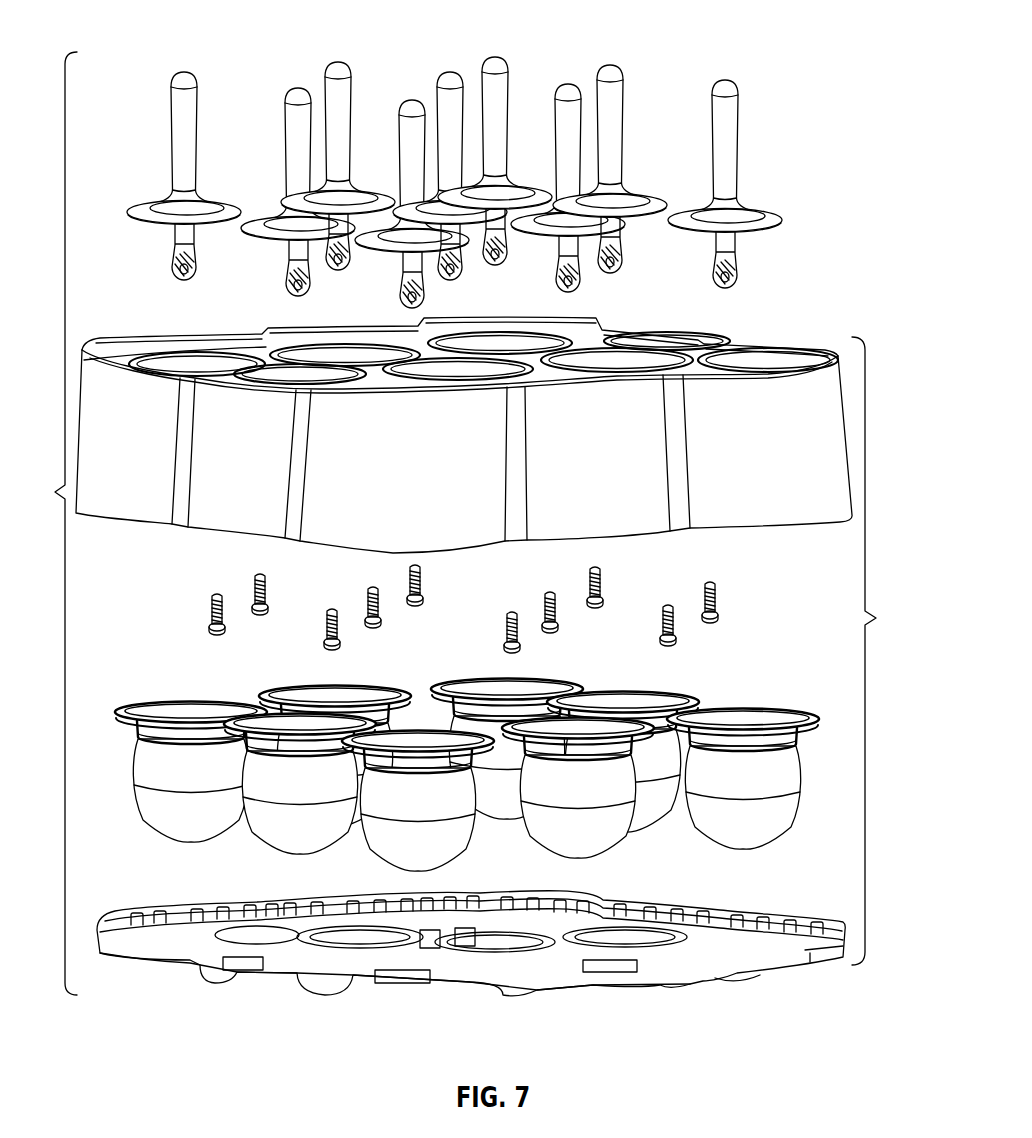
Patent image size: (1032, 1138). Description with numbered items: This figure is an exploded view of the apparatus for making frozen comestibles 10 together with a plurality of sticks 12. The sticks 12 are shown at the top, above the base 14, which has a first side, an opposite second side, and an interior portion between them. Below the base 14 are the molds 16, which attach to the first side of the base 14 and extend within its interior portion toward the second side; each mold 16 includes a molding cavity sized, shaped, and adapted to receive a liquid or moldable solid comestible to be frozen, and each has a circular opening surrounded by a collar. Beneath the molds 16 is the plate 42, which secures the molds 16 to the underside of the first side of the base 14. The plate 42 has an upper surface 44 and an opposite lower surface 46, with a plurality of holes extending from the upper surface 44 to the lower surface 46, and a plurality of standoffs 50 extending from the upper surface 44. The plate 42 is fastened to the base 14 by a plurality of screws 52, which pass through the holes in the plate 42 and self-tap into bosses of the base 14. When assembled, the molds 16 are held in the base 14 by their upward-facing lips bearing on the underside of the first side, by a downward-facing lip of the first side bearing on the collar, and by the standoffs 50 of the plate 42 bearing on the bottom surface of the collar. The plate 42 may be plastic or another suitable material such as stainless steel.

The apparatus for making frozen comestibles 10 is at (481, 523).
The sticks 12 is at (205, 79).
The base 14 is at (797, 324).
The molds 16 is at (183, 786).
The plate 42 is at (479, 937).
The upper surface 44 is at (423, 930).
The lower surface 46 is at (737, 973).
The standoffs 50 is at (162, 912).
The screws 52 is at (211, 613).